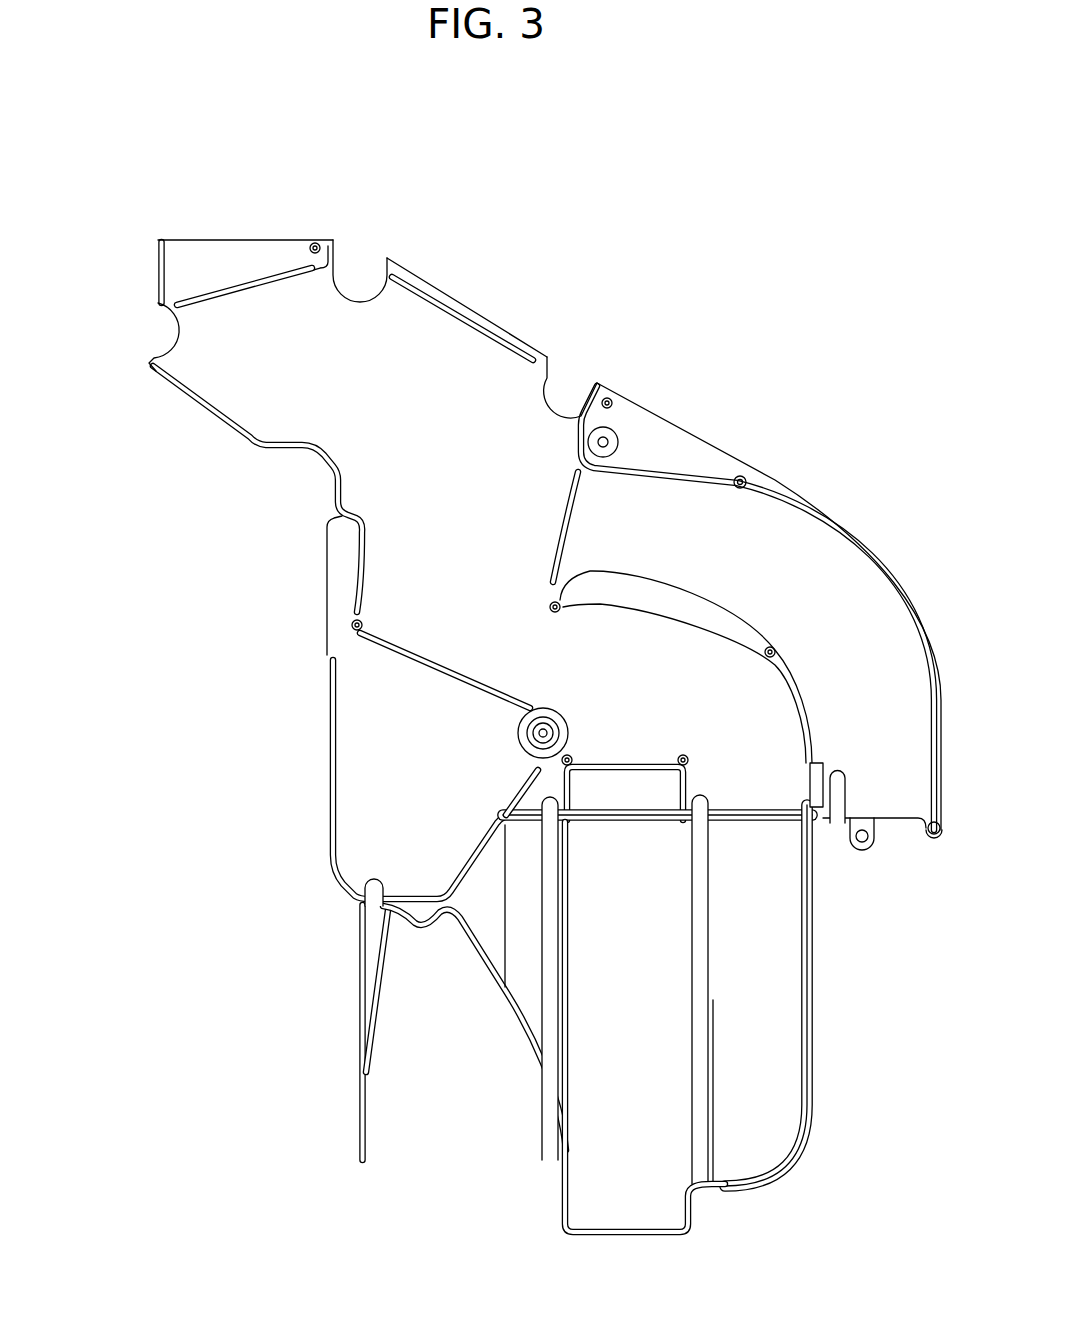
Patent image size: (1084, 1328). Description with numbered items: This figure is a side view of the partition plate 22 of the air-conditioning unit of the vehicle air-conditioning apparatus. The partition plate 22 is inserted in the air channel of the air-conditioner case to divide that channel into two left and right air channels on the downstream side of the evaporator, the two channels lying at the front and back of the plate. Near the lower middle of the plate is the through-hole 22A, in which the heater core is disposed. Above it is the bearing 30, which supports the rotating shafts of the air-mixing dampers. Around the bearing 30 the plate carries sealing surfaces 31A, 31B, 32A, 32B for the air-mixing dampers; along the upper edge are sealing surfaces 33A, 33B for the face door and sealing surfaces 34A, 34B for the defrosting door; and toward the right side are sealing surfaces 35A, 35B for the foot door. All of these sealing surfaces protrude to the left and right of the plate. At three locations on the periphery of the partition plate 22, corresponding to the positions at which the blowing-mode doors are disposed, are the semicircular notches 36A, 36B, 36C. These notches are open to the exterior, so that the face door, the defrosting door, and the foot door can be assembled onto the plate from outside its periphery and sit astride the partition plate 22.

The partition plate 22 is at (502, 703).
The through-hole 22A is at (598, 1163).
The bearing 30 is at (553, 728).
The sealing surface 31A is at (445, 634).
The sealing surface 31B is at (427, 658).
The sealing surface 32A is at (463, 781).
The sealing surface 32B is at (518, 783).
The sealing surface 33A is at (483, 302).
The sealing surface 33B is at (482, 327).
The sealing surface 34A is at (244, 238).
The sealing surface 34B is at (255, 284).
The sealing surface 35A is at (494, 522).
The sealing surface 35B is at (570, 517).
The semicircular notch 36A is at (360, 282).
The semicircular notch 36B is at (163, 335).
The semicircular notch 36C is at (562, 385).